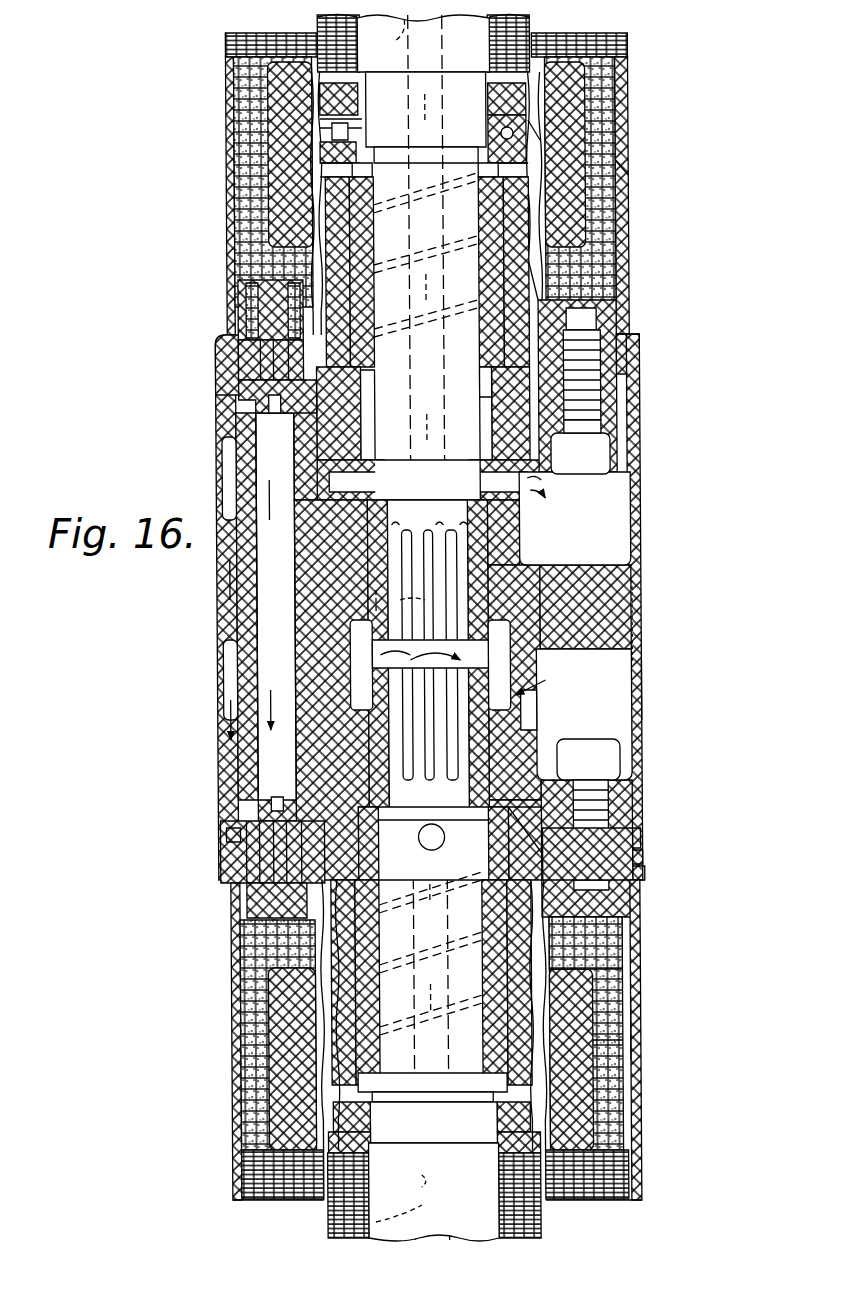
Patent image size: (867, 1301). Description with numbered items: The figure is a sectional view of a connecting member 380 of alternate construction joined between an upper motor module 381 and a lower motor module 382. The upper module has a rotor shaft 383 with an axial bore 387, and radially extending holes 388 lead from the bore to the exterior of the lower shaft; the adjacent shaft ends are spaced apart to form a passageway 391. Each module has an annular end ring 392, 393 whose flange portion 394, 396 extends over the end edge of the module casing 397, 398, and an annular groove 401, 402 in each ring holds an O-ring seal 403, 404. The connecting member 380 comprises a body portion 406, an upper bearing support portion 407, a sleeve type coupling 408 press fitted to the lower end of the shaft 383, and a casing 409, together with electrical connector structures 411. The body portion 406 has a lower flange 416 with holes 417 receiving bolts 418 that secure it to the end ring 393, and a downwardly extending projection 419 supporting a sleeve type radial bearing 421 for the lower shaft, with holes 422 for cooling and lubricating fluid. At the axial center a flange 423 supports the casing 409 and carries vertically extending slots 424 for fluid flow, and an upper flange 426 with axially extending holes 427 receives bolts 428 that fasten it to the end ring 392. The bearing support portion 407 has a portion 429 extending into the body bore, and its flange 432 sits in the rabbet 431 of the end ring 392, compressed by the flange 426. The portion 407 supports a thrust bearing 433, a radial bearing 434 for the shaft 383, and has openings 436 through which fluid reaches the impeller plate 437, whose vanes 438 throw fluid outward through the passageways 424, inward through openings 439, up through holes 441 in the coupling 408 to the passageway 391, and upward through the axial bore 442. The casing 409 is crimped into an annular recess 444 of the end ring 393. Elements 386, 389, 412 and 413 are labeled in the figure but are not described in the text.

The connecting member 380 is at (205, 623).
The upper motor module 381 is at (212, 150).
The lower motor module 382 is at (223, 1065).
The rotor shaft 383 is at (478, 61).
The upper pipe coupling 386 is at (386, 40).
The axial bore 387 is at (330, 1218).
The radially extending holes 388 is at (428, 849).
The lower pipe 389 is at (486, 1235).
The passageway 391 is at (505, 675).
The annular end ring 392 is at (624, 334).
The annular end ring 393 is at (641, 860).
The flange portion 394 is at (222, 345).
The flange portion 396 is at (643, 875).
The casing 397 is at (624, 170).
The casing 398 is at (631, 1028).
The annular groove 401 is at (633, 386).
The annular groove 402 is at (641, 828).
The O-ring seal 403 is at (632, 368).
The O-ring seal 404 is at (641, 846).
The body portion 406 is at (522, 549).
The upper bearing support portion 407 is at (530, 262).
The sleeve type coupling 408 is at (540, 722).
The casing 409 is at (642, 692).
The electrical connector structures 411 is at (258, 568).
The packing 412 is at (245, 318).
The lower packing 413 is at (247, 898).
The radially outward extending flange 416 is at (230, 805).
The holes 417 is at (609, 792).
The bolts 418 is at (615, 756).
The downwardly extending projection 419 is at (629, 1060).
The sleeve type radial bearing 421 is at (522, 962).
The holes 422 is at (434, 1012).
The radially outwardly extending flange 423 is at (593, 610).
The vertically extending slots 424 is at (232, 650).
The flange 426 is at (232, 420).
The axially extending holes 427 is at (600, 424).
The bolts 428 is at (600, 454).
The portion 429 is at (330, 462).
The rabbet 431 is at (512, 374).
The flange 432 is at (250, 393).
The thrust bearing 433 is at (540, 136).
The radial bearing 434 is at (572, 278).
The openings 436 is at (557, 310).
The impeller plate 437 is at (605, 546).
The vanes 438 is at (548, 488).
The openings 439 is at (525, 738).
The holes 441 is at (378, 642).
The axial bore 442 is at (370, 598).
The annular recess 444 is at (223, 857).